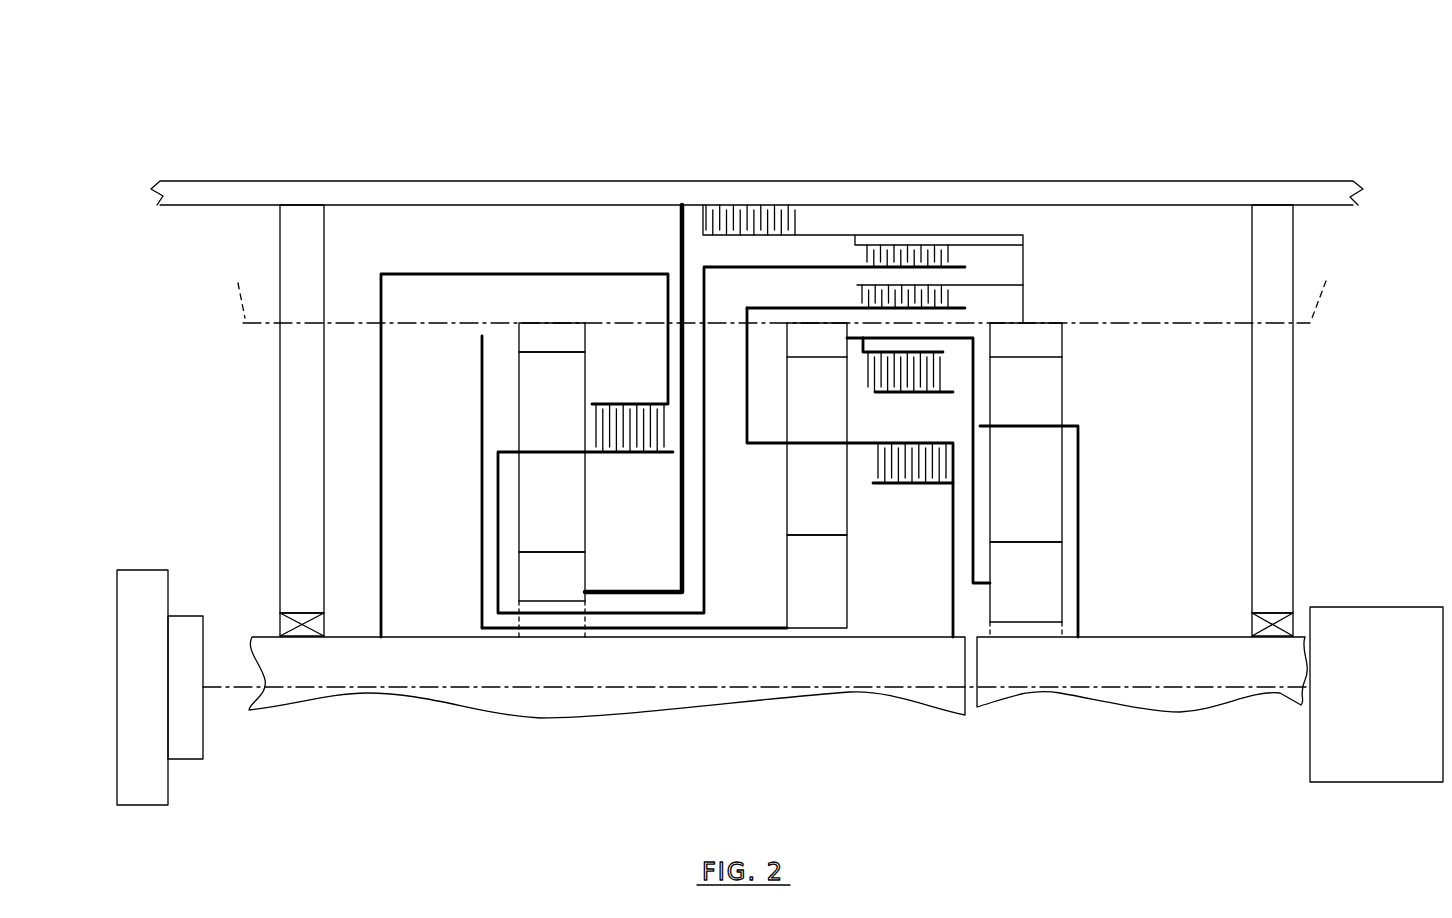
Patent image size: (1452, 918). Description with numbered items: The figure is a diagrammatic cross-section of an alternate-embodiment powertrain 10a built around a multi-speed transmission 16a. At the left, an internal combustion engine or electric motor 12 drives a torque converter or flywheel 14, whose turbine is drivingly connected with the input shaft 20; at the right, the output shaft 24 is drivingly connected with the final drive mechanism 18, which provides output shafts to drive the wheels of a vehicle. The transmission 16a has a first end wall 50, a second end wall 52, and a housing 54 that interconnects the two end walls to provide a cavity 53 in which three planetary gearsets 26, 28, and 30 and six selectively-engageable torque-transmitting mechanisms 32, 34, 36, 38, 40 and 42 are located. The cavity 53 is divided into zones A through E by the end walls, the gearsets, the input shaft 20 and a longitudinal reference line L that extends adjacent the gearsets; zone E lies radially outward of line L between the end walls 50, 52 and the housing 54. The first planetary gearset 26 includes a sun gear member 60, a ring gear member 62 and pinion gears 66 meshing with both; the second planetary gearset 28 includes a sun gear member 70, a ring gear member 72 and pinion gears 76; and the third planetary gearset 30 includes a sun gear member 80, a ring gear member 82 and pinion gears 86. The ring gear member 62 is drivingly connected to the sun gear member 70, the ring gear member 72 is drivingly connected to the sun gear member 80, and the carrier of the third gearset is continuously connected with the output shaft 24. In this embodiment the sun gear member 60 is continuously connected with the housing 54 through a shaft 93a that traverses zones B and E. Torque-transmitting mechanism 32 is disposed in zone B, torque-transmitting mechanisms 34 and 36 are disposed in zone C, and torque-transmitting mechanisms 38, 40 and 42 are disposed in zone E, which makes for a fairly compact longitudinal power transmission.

The powertrain 10a is at (394, 160).
The internal combustion engine or electric motor 12 is at (142, 687).
The torque converter or flywheel 14 is at (185, 687).
The transmission 16a is at (1312, 357).
The final drive mechanism 18 is at (1310, 758).
The input shaft 20 is at (538, 718).
The output shaft 24 is at (1182, 712).
The first planetary gearset 26 is at (552, 530).
The second planetary gearset 28 is at (664, 552).
The third planetary gearset 30 is at (1039, 554).
The torque-transmitting mechanism 32 is at (604, 452).
The torque-transmitting mechanism 34 is at (878, 398).
The torque-transmitting mechanism 36 is at (878, 487).
The torque-transmitting mechanism 38 is at (856, 243).
The torque-transmitting mechanism 40 is at (856, 286).
The torque-transmitting mechanism 42 is at (705, 210).
The first end wall 50 is at (282, 232).
The second end wall 52 is at (1293, 430).
The cavity 53 is at (1167, 255).
The housing 54 is at (773, 234).
The sun gear member 60 is at (552, 576).
The ring gear member 62 is at (548, 333).
The pinion gears 66 is at (552, 452).
The sun gear member 70 is at (825, 632).
The ring gear member 72 is at (817, 340).
The pinion gears 76 is at (817, 489).
The sun gear member 80 is at (1033, 632).
The ring gear member 82 is at (1026, 340).
The pinion gears 86 is at (1026, 484).
The shaft 93a is at (678, 235).